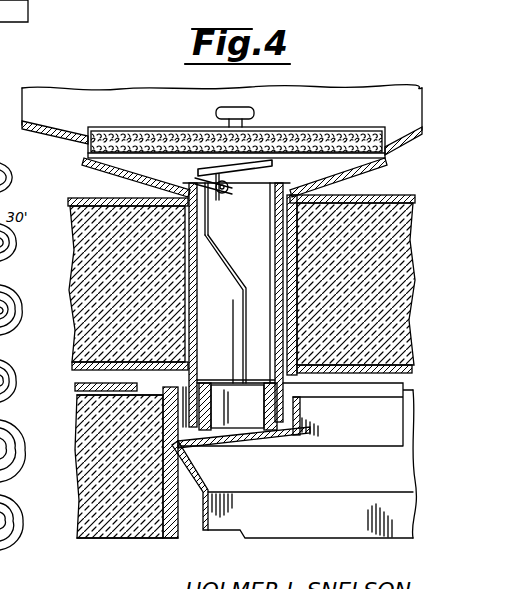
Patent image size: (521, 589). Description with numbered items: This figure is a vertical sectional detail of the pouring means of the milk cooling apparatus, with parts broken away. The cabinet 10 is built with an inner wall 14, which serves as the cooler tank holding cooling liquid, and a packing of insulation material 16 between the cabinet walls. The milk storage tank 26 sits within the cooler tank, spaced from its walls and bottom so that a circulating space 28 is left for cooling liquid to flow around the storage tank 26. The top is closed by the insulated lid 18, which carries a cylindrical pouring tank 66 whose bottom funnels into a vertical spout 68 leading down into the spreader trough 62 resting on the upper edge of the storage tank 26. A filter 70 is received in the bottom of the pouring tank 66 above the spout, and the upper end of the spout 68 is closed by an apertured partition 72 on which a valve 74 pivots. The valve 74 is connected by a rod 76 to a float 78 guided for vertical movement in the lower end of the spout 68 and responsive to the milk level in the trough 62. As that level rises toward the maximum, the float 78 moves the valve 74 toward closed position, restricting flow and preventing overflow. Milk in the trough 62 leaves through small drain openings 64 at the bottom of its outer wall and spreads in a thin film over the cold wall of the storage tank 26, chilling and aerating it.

The insulated cabinet 10 is at (93, 552).
The inner wall 14 is at (170, 537).
The insulation material 16 is at (135, 538).
The insulated lid 18 is at (393, 198).
The milk storage tank 26 is at (320, 538).
The circulating space 28 is at (190, 522).
The spreader trough 62 is at (298, 446).
The drain openings 64 is at (195, 450).
The pouring tank 66 is at (118, 100).
The spout 68 is at (282, 244).
The filter 70 is at (320, 135).
The apertured partition 72 is at (285, 194).
The valve 74 is at (233, 194).
The rod 76 is at (235, 276).
The float 78 is at (264, 410).